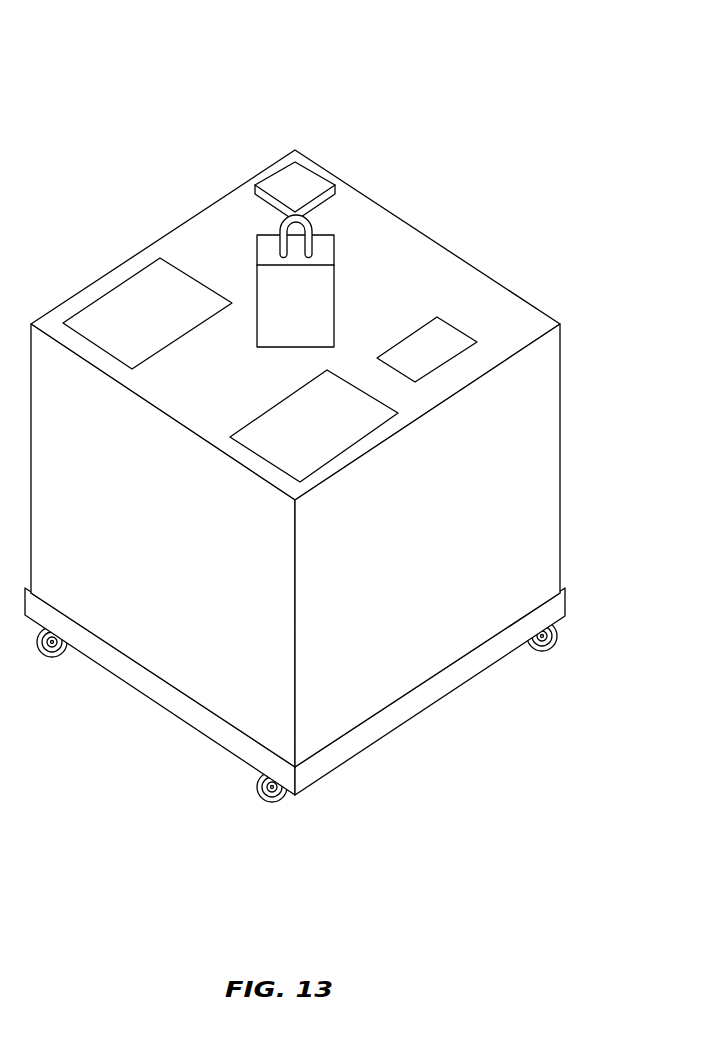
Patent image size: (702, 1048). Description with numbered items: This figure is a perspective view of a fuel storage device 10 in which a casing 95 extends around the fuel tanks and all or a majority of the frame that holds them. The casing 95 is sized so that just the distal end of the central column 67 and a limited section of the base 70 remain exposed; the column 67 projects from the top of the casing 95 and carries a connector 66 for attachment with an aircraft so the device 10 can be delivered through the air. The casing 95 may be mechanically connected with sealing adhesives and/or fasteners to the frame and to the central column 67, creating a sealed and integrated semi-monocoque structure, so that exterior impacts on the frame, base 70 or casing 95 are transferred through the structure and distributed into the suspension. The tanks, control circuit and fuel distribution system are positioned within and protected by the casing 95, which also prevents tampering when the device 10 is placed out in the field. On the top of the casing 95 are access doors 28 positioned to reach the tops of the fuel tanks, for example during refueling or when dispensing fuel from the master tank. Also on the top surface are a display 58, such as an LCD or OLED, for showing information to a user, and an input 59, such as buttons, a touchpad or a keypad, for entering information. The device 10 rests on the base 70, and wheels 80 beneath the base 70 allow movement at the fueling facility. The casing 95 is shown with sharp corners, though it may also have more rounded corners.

The fuel storage device 10 is at (436, 98).
The access doors 28 is at (121, 301).
The display 58 is at (414, 360).
The input 59 is at (283, 196).
The connector 66 is at (318, 215).
The central column 67 is at (313, 297).
The base 70 is at (222, 732).
The wheels 80 is at (265, 795).
The casing 95 is at (187, 645).